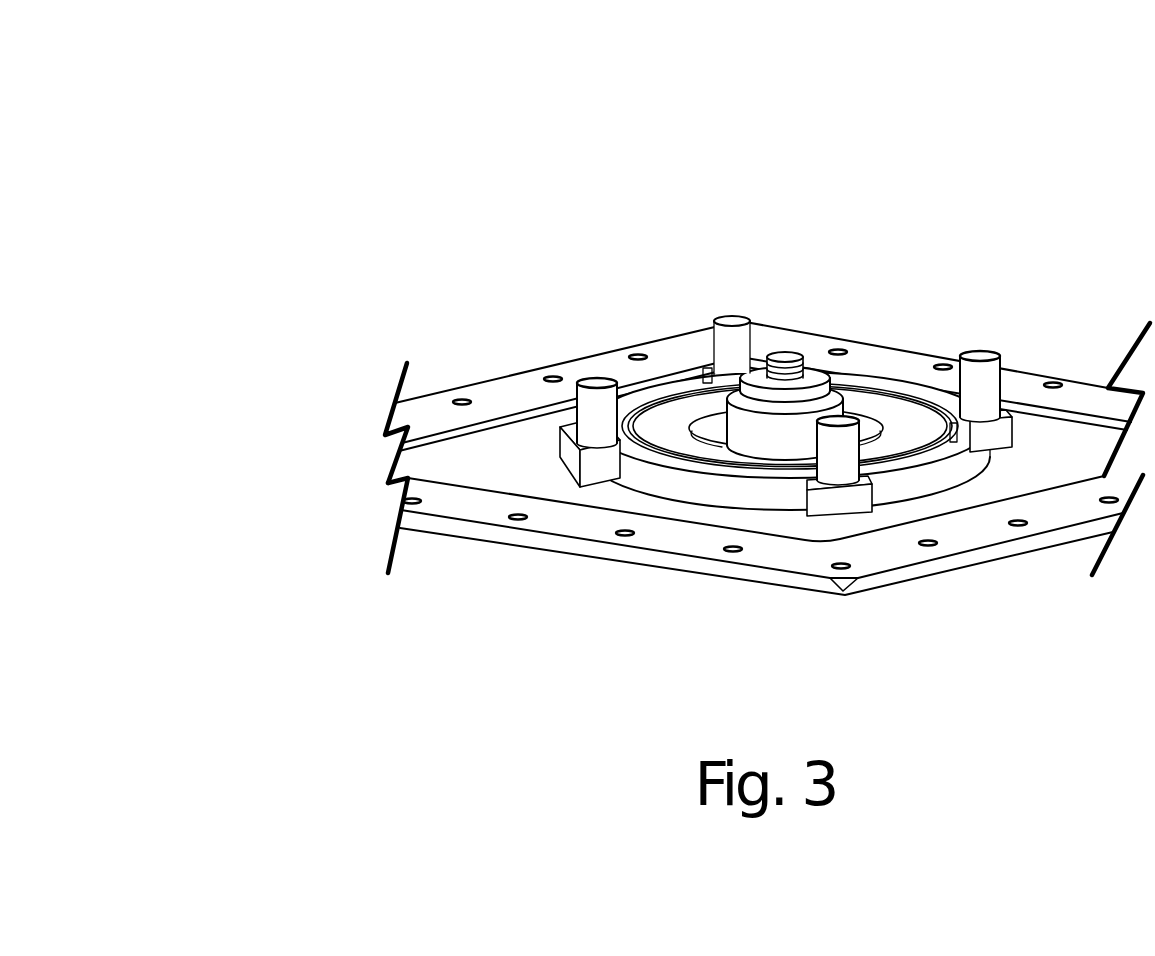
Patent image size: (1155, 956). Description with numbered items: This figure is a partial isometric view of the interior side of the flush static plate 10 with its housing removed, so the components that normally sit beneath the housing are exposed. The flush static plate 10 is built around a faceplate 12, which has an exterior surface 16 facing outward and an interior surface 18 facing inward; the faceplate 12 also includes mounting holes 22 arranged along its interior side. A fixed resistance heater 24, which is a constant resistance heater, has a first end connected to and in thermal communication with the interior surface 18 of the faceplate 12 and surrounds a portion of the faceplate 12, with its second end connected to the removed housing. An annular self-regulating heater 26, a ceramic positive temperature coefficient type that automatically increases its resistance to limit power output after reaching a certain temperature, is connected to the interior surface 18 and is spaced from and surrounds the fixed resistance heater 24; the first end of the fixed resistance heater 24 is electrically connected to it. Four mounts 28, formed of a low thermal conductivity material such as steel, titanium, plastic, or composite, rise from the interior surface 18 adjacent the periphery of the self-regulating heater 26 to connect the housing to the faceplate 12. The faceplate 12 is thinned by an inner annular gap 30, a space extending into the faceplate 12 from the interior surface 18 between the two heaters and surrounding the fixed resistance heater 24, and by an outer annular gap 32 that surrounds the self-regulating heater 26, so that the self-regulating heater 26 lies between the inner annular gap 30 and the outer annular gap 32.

The flush static plate 10 is at (699, 363).
The faceplate 12 is at (699, 457).
The exterior surface 16 is at (497, 545).
The interior surface 18 is at (499, 390).
The mounting holes 22 is at (623, 536).
The fixed resistance heater 24 is at (785, 425).
The self-regulating heater 26 is at (734, 379).
The mounts 28 is at (730, 357).
The inner annular gap 30 is at (713, 433).
The outer annular gap 32 is at (637, 410).